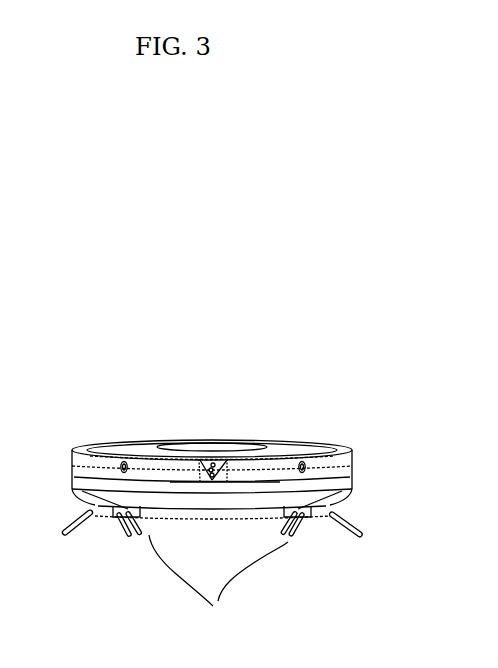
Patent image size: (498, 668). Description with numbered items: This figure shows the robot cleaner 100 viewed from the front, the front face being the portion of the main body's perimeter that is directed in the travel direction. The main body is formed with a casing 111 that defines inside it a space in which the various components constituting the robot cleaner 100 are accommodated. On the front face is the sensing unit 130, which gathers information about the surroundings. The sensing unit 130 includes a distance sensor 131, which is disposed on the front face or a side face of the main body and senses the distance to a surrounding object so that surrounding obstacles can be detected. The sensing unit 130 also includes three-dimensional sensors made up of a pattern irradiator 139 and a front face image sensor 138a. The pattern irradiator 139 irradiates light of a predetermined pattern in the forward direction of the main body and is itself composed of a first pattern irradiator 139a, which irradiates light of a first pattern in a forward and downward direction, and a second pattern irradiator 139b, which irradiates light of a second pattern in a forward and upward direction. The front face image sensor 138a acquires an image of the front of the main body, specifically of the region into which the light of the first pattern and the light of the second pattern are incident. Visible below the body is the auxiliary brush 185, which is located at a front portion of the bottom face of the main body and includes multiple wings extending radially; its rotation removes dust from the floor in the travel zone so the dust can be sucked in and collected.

The robot cleaner 100 is at (76, 386).
The casing 111 is at (335, 465).
The sensing unit 130 is at (313, 333).
The distance sensor 131 is at (126, 446).
The front face image sensor 138a is at (197, 440).
The pattern irradiator 139 is at (272, 364).
The first pattern irradiator 139a is at (238, 440).
The second pattern irradiator 139b is at (213, 440).
The auxiliary brush 185 is at (218, 584).